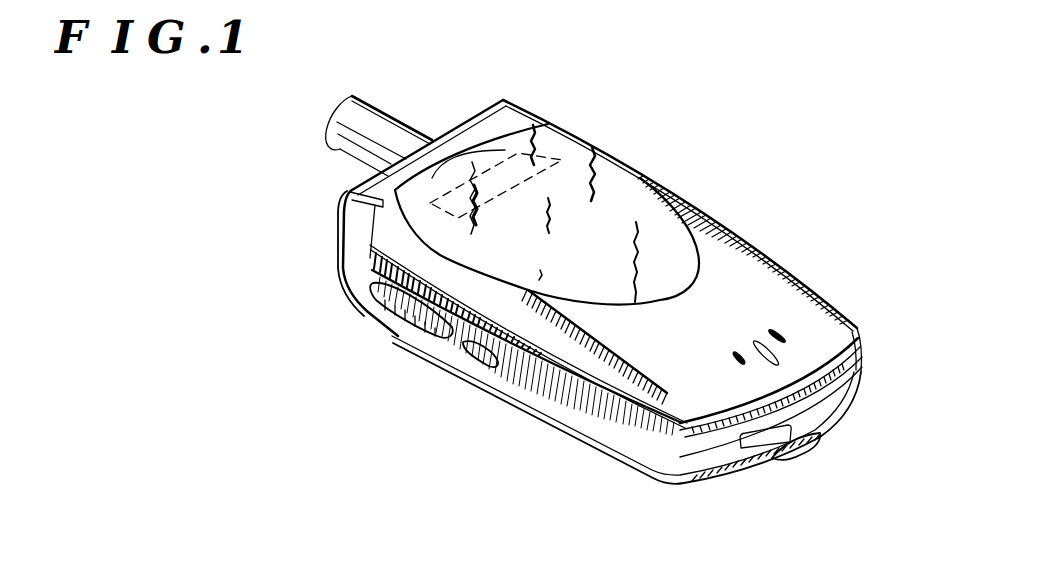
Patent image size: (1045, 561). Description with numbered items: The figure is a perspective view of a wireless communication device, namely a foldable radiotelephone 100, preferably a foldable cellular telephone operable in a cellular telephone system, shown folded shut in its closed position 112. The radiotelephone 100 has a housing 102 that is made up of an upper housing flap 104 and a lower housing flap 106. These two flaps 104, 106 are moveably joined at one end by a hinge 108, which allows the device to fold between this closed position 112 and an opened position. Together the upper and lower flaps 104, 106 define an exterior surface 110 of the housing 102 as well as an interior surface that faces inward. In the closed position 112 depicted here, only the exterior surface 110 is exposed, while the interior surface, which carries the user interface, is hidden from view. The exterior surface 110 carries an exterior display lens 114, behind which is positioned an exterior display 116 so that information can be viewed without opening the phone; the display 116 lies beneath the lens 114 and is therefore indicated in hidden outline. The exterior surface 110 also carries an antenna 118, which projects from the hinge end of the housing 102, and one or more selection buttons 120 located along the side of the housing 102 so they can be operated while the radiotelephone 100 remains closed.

The foldable radiotelephone 100 is at (797, 108).
The housing 102 is at (840, 312).
The upper housing flap 104 is at (771, 382).
The lower housing flap 106 is at (572, 418).
The hinge 108 is at (358, 195).
The exterior surface 110 is at (752, 262).
The closed position 112 is at (596, 102).
The exterior display lens 114 is at (637, 197).
The exterior display 116 is at (517, 160).
The antenna 118 is at (390, 115).
The selection buttons 120 is at (432, 332).